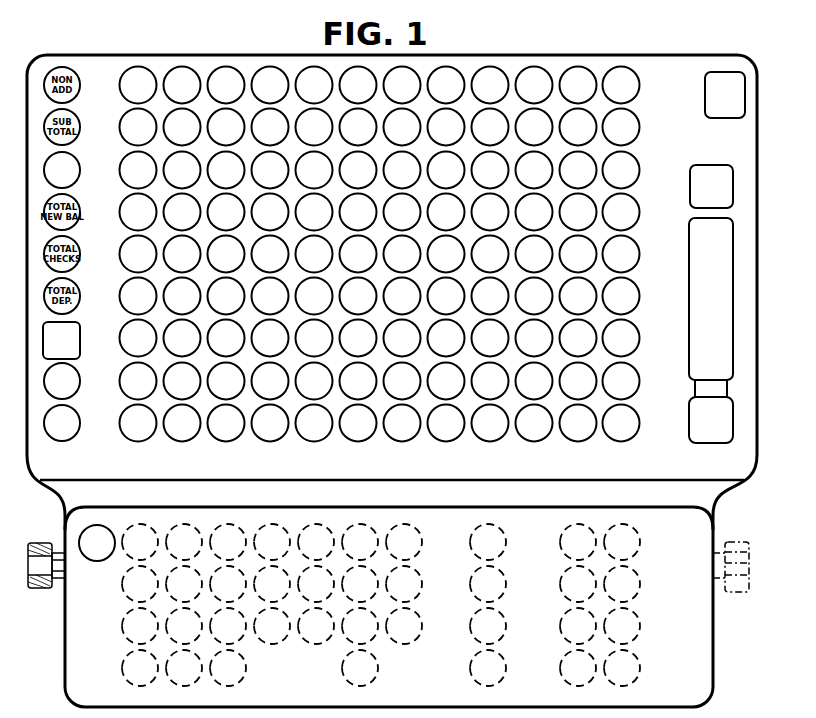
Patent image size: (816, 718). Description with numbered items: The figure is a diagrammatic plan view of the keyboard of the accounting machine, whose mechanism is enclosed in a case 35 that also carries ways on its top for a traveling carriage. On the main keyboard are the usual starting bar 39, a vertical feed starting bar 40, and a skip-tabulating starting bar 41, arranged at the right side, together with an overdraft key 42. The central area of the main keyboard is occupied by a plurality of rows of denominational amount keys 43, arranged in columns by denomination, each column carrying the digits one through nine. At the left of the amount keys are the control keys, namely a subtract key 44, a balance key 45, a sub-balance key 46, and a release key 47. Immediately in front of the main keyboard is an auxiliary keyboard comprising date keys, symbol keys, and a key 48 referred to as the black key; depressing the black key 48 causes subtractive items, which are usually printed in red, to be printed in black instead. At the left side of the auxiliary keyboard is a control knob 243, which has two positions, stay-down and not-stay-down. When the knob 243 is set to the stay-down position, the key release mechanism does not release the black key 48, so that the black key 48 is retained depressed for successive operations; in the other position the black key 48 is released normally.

The case 35 is at (745, 466).
The starting bar 39 is at (690, 366).
The vertical feed starting bar 40 is at (690, 176).
The skip-tabulating starting bar 41 is at (690, 431).
The overdraft key 42 is at (707, 115).
The denominational amount keys 43 is at (182, 67).
The subtract key 44 is at (80, 170).
The balance key 45 is at (80, 331).
The sub-balance key 46 is at (80, 381).
The release key 47 is at (79, 429).
The black key 48 is at (100, 561).
The control knob 243 is at (50, 589).